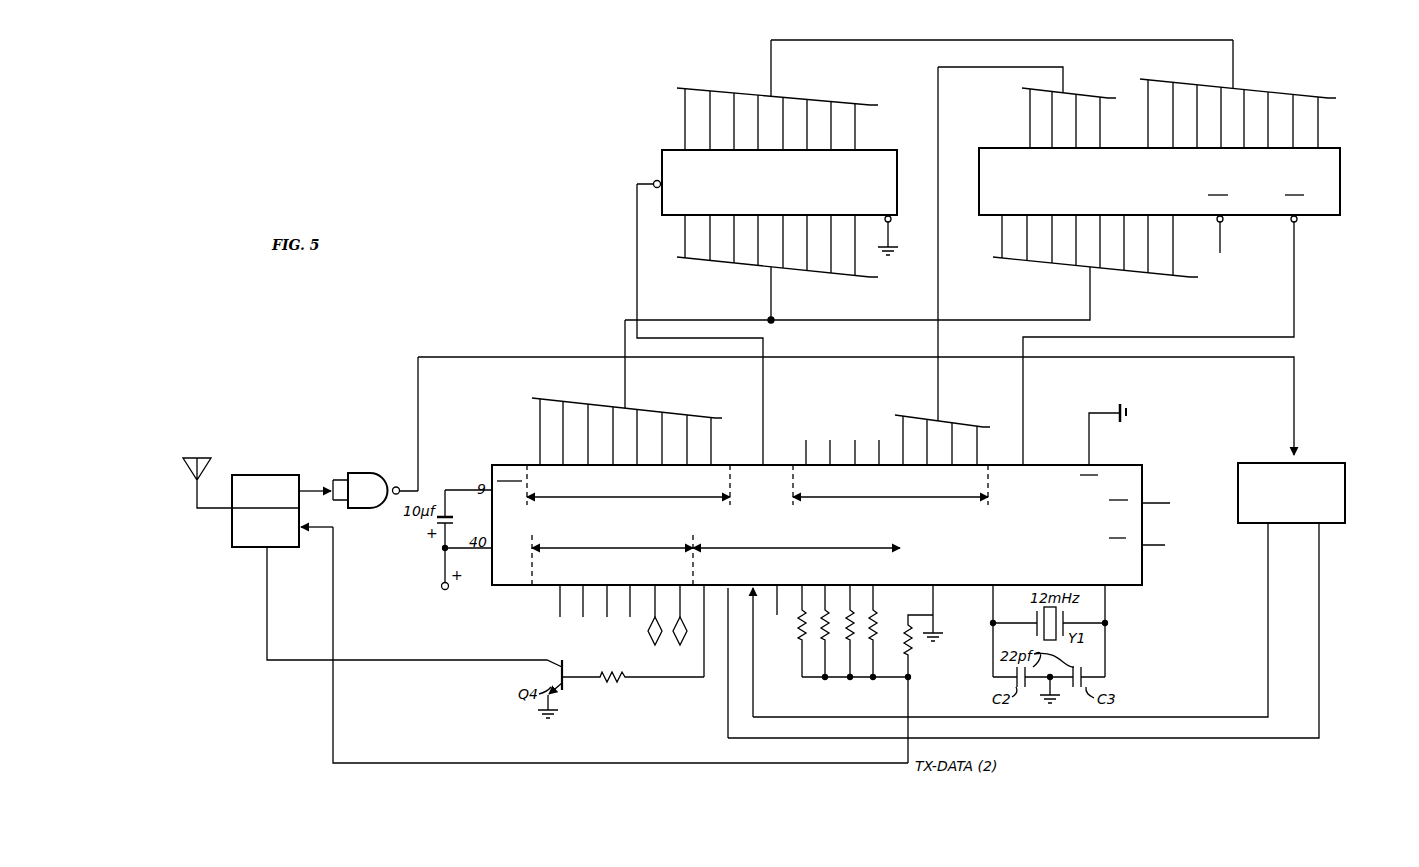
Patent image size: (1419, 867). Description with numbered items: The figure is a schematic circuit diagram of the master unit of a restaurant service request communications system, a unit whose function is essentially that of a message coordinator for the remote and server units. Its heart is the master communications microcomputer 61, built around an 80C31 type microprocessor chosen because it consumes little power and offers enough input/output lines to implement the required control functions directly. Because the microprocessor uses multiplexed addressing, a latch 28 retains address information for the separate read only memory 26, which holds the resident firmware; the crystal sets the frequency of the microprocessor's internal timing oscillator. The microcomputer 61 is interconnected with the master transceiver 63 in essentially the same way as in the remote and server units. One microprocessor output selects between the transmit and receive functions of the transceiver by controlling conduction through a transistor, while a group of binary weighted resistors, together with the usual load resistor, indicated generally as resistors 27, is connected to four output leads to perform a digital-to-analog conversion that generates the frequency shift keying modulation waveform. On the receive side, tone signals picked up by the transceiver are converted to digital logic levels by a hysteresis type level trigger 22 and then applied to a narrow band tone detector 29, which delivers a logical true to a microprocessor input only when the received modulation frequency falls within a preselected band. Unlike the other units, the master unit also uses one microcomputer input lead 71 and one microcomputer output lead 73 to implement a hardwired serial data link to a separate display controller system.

The hysteresis type level trigger 22 is at (365, 474).
The read only memory 26 is at (1340, 178).
The resistors 27 is at (861, 681).
The latch 28 is at (891, 173).
The tone detector 29 is at (1314, 463).
The master communications microcomputer 61 is at (826, 400).
The master transceiver 63 is at (255, 475).
The microcomputer input lead 71 is at (676, 638).
The microcomputer output lead 73 is at (650, 621).